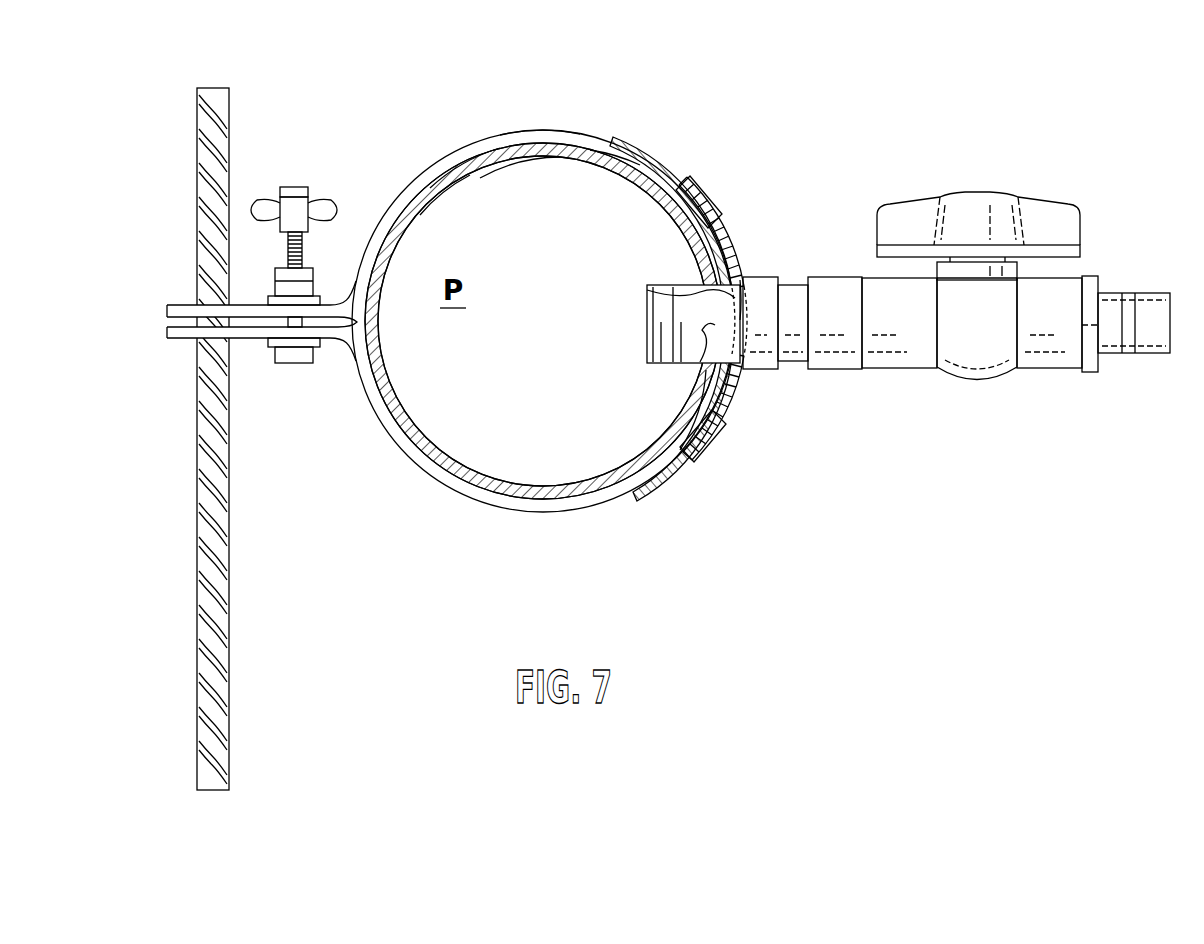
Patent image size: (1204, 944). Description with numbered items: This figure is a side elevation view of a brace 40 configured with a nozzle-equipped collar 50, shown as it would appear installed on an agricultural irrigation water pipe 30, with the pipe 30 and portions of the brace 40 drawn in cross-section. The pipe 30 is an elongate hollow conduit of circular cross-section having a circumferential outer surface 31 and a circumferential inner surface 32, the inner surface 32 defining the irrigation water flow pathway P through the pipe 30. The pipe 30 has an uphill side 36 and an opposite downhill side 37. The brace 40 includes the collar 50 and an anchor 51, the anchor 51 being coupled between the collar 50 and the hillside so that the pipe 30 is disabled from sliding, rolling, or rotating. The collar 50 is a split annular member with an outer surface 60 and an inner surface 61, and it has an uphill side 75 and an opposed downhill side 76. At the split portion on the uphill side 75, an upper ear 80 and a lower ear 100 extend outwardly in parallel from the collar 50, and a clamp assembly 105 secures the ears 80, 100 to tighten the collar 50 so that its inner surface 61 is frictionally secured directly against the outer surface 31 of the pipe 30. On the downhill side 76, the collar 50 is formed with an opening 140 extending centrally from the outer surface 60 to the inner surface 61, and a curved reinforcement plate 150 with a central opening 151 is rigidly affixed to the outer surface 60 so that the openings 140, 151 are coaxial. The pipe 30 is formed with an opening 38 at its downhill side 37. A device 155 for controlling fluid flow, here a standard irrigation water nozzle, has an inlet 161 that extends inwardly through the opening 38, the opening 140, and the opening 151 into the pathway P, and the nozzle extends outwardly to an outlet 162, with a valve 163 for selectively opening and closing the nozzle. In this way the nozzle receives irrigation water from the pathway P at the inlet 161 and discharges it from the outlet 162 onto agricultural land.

The pipe 30 is at (507, 160).
The circumferential outer surface 31 is at (465, 165).
The circumferential inner surface 32 is at (440, 198).
The uphill side 36 is at (396, 328).
The downhill side 37 is at (742, 282).
The opening 38 is at (692, 370).
The brace 40 is at (580, 122).
The collar 50 is at (642, 165).
The anchor 51 is at (238, 133).
The outer surface 60 is at (533, 130).
The inner surface 61 is at (607, 150).
The uphill side 75 is at (345, 288).
The downhill side 76 is at (746, 381).
The ear 80 is at (247, 305).
The ear 100 is at (245, 340).
The clamp assembly 105 is at (298, 176).
The opening 140 is at (645, 287).
The reinforcement plate 150 is at (725, 220).
The central opening 151 is at (745, 318).
The device 155 is at (983, 392).
The inlet 161 is at (660, 342).
The outlet 162 is at (1158, 345).
The valve 163 is at (993, 215).